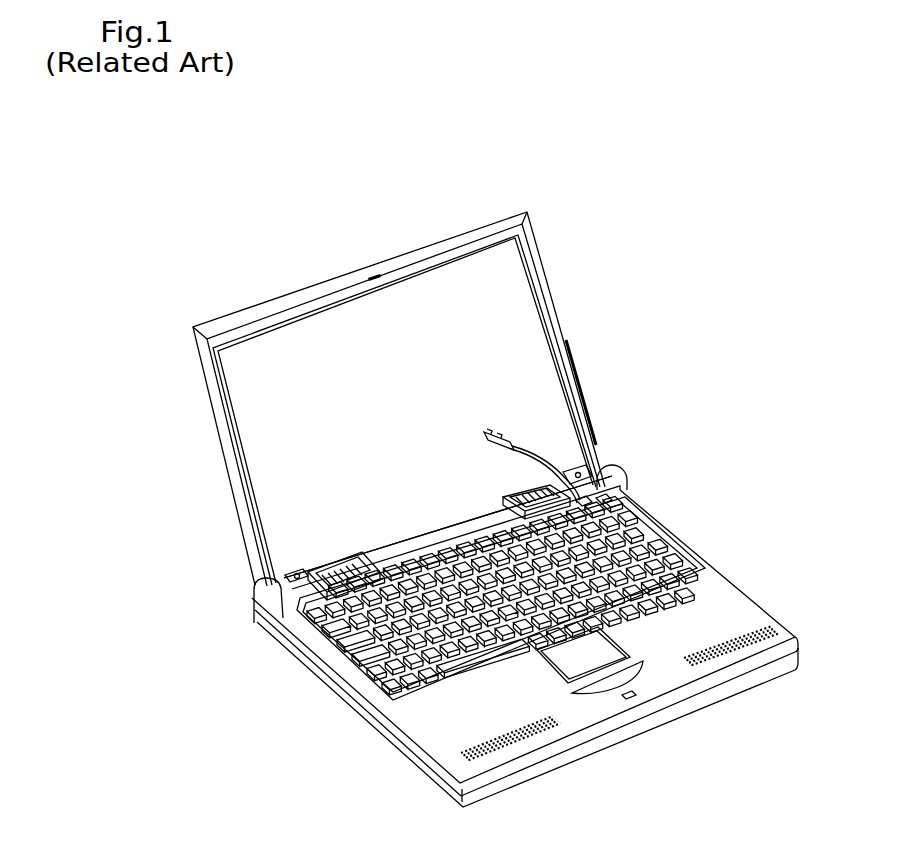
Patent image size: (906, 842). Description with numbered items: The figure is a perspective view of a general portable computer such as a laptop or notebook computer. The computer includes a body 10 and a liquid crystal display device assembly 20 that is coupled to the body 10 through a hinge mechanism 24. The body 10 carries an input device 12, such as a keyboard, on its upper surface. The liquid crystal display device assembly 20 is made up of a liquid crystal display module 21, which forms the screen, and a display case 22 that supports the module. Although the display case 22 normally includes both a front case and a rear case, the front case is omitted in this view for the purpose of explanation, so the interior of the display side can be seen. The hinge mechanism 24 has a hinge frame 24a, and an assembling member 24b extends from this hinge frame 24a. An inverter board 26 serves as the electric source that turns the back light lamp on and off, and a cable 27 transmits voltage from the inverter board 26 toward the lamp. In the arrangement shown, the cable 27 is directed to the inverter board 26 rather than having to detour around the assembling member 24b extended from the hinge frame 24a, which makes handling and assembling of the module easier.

The body 10 is at (288, 718).
The input device 12 is at (708, 562).
The liquid crystal display device assembly 20 is at (433, 193).
The liquid crystal display module 21 is at (562, 408).
The display case 22 is at (549, 267).
The hinge mechanism 24 is at (660, 527).
The hinge frame 24a is at (603, 498).
The assembling member 24b is at (582, 500).
The inverter board 26 is at (397, 538).
The cable 27 is at (577, 455).